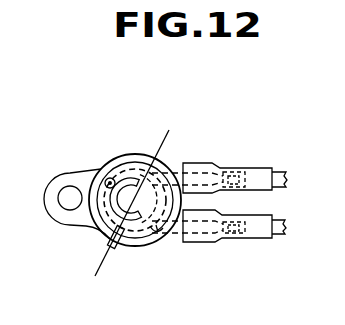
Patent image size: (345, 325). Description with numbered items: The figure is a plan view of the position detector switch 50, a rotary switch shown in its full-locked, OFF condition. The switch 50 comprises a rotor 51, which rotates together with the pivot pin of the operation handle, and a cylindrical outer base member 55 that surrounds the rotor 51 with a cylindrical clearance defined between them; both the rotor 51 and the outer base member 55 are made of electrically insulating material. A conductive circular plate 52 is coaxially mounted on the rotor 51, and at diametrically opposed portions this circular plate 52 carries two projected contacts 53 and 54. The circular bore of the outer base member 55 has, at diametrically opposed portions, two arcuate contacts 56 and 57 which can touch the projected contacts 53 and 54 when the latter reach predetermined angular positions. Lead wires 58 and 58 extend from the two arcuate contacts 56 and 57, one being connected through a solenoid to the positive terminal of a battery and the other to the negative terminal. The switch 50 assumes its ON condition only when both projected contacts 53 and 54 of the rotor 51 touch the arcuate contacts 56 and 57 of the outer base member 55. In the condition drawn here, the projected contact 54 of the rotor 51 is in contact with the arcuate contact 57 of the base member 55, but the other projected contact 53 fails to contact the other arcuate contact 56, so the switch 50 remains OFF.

The position detector switch 50 is at (198, 153).
The rotor 51 is at (141, 247).
The conductive circular plate 52 is at (92, 180).
The projected contact 53 is at (101, 200).
The projected contact 54 is at (155, 233).
The cylindrical outer base member 55 is at (126, 163).
The arcuate contact 56 is at (135, 165).
The arcuate contact 57 is at (129, 236).
The lead wire 58 is at (282, 172).